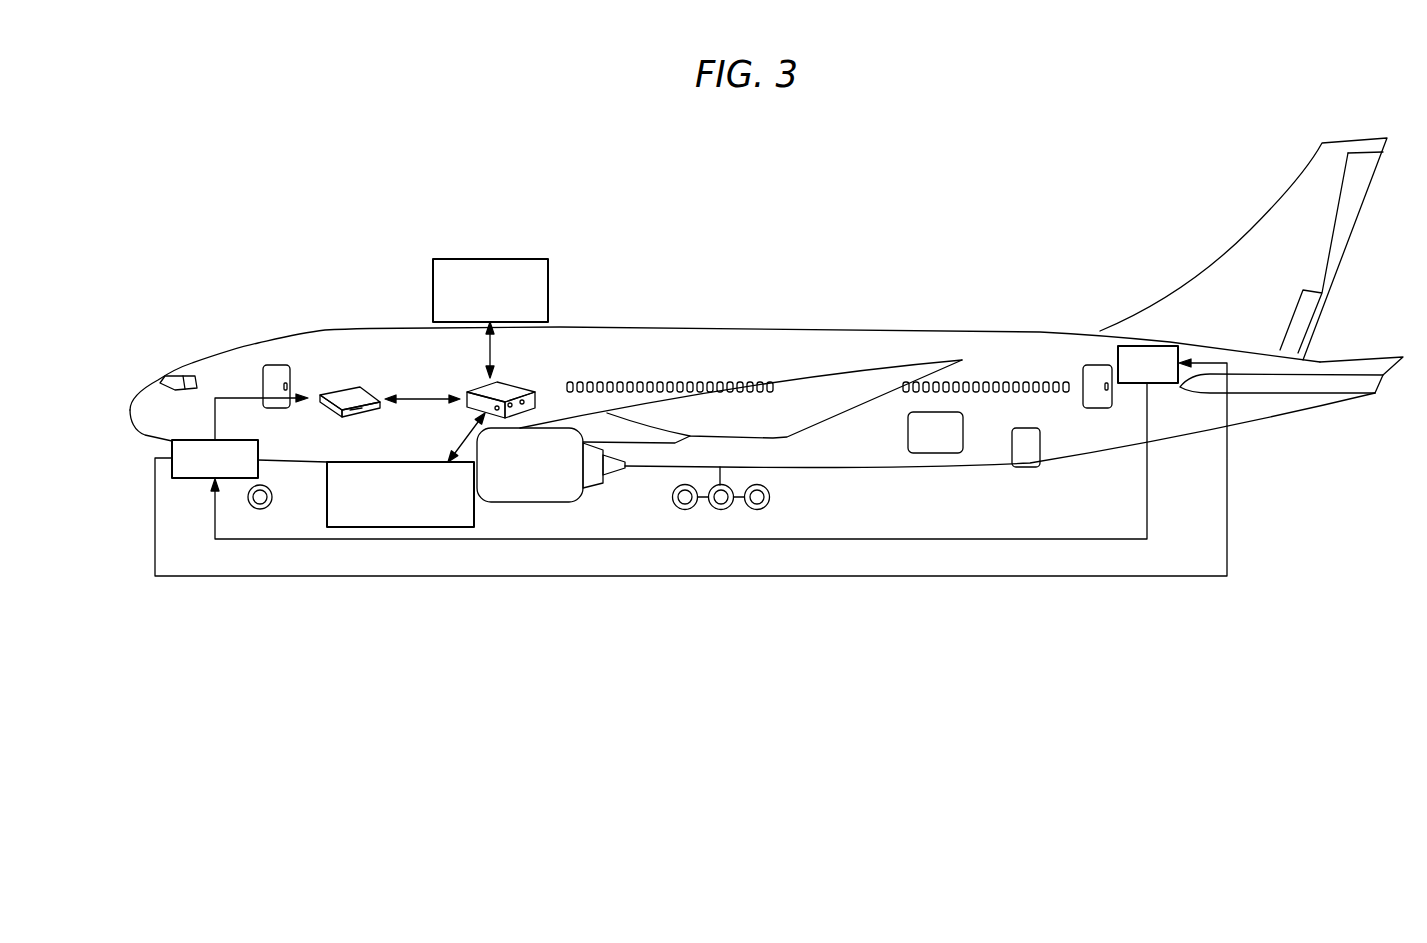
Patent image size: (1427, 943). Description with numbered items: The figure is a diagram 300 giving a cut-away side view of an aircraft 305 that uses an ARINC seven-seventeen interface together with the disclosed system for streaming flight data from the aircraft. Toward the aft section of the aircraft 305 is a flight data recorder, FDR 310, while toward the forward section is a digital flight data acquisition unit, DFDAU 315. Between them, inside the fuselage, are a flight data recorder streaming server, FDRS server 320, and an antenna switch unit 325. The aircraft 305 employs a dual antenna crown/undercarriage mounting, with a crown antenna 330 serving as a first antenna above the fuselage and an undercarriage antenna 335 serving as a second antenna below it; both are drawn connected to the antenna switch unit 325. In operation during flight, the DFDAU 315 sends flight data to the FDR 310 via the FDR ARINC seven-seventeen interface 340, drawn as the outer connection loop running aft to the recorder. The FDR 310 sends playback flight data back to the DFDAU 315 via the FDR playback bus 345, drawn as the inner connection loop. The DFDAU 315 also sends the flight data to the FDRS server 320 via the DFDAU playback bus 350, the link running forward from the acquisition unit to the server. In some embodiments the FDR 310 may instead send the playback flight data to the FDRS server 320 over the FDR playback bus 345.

The diagram 300 is at (380, 126).
The aircraft 305 is at (847, 328).
The flight data recorder (FDR) 310 is at (1138, 346).
The digital flight data acquisition unit (DFDAU) 315 is at (182, 480).
The flight data recorder streaming (FDRS) server 320 is at (338, 389).
The antenna switch unit 325 is at (507, 386).
The crown antenna 330 is at (548, 291).
The undercarriage antenna 335 is at (327, 494).
The FDR ARINC 717 interface 340 is at (1065, 577).
The FDR playback bus 345 is at (1020, 538).
The DFDAU playback bus 350 is at (237, 398).